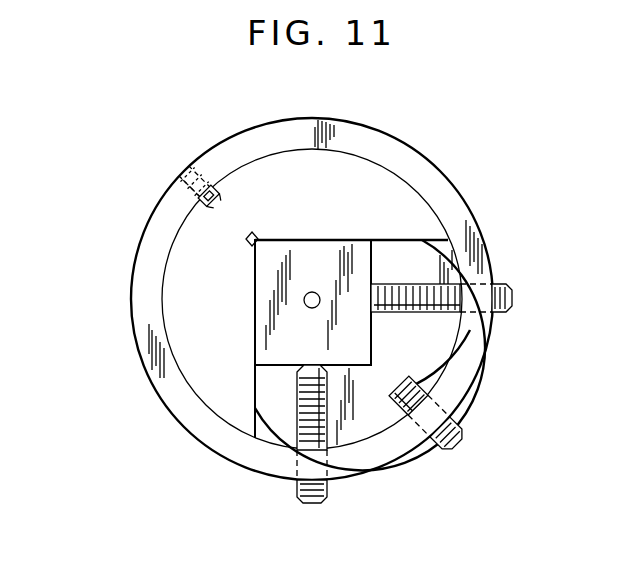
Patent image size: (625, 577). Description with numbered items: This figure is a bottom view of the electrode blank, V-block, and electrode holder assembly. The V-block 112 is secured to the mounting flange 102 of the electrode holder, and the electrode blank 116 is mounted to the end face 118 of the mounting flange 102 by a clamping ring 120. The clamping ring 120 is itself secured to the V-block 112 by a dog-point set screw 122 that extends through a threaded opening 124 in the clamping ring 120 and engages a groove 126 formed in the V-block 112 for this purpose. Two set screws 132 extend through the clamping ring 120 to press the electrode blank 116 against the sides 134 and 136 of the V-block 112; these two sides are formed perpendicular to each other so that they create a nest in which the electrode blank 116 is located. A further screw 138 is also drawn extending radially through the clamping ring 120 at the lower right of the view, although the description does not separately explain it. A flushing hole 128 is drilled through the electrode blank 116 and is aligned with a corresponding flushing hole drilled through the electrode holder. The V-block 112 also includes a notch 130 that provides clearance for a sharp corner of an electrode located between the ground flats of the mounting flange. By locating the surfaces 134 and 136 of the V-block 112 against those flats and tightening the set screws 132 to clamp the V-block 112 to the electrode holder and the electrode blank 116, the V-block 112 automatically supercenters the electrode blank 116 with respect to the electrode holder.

The mounting flange 102 is at (417, 366).
The V-block 112 is at (177, 288).
The electrode blank 116 is at (262, 272).
The end face 118 is at (415, 334).
The clamping ring 120 is at (437, 190).
The dog-point set screw 122 is at (195, 168).
The threaded opening 124 is at (184, 196).
The groove 126 is at (230, 185).
The flushing hole 128 is at (312, 291).
The notch 130 is at (258, 236).
The set screws 132 is at (500, 283).
The side of V-block 134 is at (252, 384).
The side of V-block 136 is at (357, 240).
The screw 138 is at (447, 455).